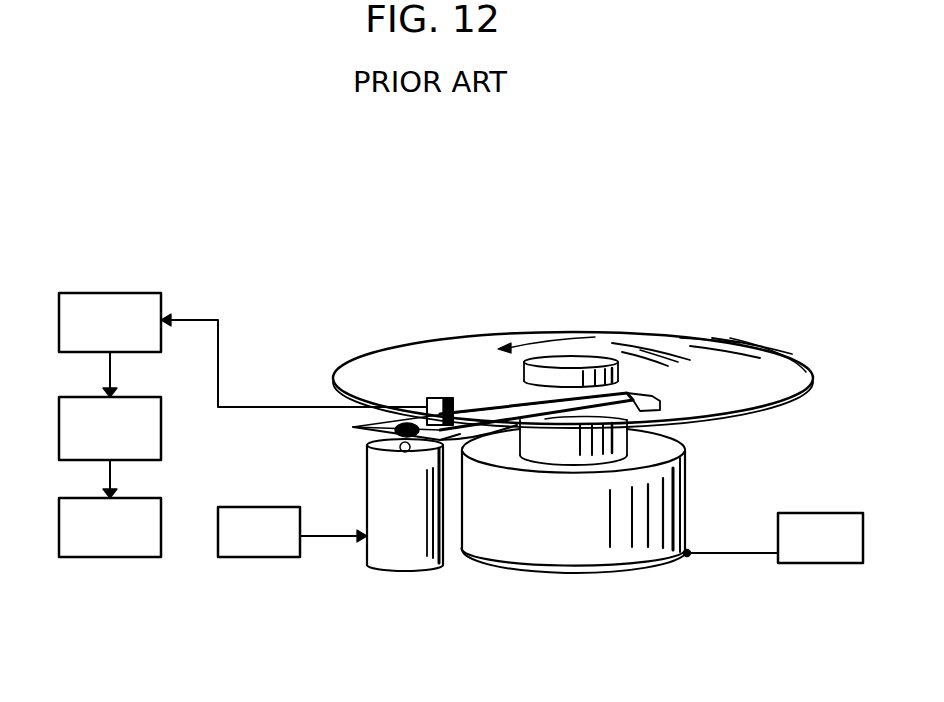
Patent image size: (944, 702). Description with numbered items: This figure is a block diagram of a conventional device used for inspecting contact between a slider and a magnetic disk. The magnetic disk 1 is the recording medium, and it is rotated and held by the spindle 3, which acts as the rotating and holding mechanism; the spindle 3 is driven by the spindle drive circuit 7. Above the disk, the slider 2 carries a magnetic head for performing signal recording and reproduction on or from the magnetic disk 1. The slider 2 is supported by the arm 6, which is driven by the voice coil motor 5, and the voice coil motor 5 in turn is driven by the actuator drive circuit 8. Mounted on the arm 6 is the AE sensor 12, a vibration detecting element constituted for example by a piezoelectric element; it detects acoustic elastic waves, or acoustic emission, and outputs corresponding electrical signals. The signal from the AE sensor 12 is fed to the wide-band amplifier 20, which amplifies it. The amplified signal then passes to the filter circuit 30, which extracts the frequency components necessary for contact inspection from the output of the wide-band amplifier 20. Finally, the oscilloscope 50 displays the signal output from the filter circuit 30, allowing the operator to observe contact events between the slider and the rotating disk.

The magnetic disk 1 is at (630, 347).
The slider 2 is at (672, 408).
The spindle 3 is at (683, 500).
The voice coil motor 5 is at (378, 493).
The arm 6 is at (498, 413).
The spindle drive circuit 7 is at (810, 555).
The actuator drive circuit 8 is at (249, 549).
The AE sensor 12 is at (432, 400).
The wide-band amplifier 20 is at (91, 341).
The filter circuit 30 is at (91, 445).
The oscilloscope 50 is at (91, 545).